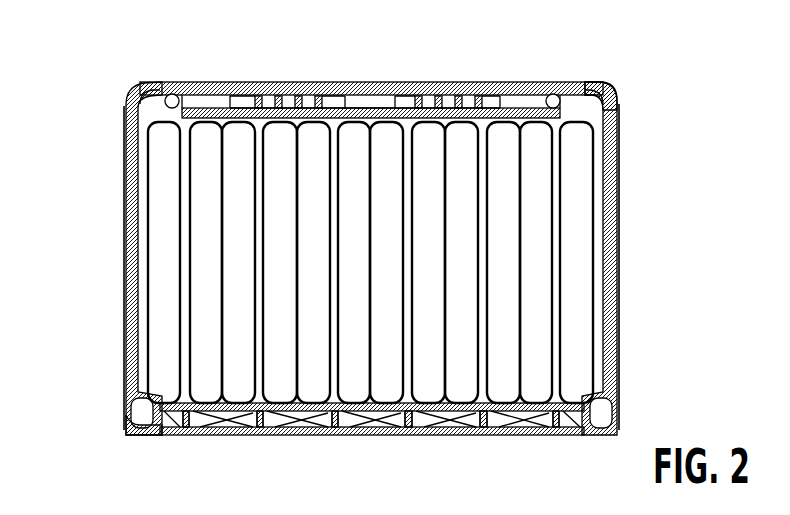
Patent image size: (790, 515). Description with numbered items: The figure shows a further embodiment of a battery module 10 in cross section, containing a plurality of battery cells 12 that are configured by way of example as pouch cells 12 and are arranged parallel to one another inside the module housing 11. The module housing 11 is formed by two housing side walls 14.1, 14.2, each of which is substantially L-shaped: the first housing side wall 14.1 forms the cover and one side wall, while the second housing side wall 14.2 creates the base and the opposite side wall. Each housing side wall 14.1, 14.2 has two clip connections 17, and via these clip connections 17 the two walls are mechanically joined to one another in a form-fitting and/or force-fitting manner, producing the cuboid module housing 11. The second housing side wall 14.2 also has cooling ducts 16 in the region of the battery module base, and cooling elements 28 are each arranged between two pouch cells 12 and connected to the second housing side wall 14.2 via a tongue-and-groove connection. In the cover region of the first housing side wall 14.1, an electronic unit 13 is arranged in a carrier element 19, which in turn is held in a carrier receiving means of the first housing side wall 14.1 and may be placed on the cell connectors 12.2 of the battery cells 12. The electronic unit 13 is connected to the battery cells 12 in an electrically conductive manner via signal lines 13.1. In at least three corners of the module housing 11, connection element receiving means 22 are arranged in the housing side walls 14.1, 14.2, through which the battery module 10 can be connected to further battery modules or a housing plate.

The battery module 10 is at (110, 103).
The module housing 11 is at (122, 168).
The battery cell 12 is at (345, 148).
The cell connector 12.2 is at (386, 108).
The electronic unit 13 is at (458, 80).
The signal line 13.1 is at (489, 82).
The first housing side wall 14.1 is at (127, 286).
The second housing side wall 14.2 is at (617, 296).
The cooling duct 16 is at (510, 437).
The clip connection 17 is at (600, 80).
The carrier element 19 is at (220, 82).
The connection element receiving means 22 is at (150, 92).
The cooling element 28 is at (430, 414).